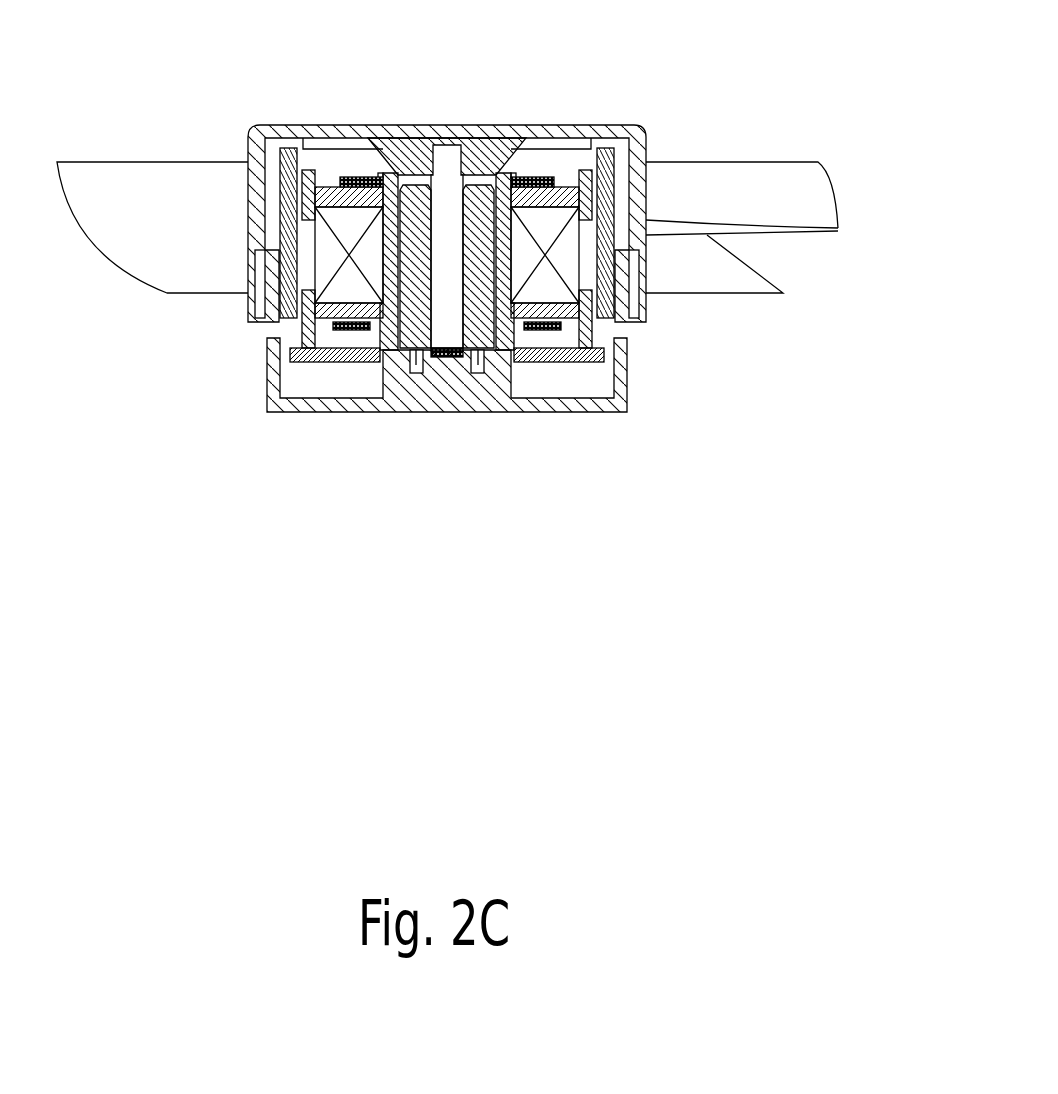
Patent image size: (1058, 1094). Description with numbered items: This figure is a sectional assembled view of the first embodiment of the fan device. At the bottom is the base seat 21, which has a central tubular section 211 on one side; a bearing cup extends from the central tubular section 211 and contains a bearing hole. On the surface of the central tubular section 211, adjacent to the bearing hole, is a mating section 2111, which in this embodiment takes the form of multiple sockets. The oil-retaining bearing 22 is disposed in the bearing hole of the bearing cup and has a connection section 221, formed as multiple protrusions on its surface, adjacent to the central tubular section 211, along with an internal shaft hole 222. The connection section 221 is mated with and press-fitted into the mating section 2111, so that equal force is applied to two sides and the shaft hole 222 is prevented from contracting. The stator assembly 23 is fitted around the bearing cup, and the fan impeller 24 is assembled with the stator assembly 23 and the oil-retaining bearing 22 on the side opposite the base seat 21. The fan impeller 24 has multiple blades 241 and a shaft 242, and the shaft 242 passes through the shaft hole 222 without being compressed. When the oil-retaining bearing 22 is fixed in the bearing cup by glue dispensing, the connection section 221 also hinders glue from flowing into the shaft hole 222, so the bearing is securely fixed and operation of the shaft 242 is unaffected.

The base seat 21 is at (560, 412).
The central tubular section 211 is at (323, 362).
The mating section 2111 is at (420, 372).
The oil-retaining bearing 22 is at (275, 125).
The connection section 221 is at (398, 350).
The shaft hole 222 is at (483, 177).
The stator assembly 23 is at (567, 193).
The fan impeller 24 is at (393, 125).
The blades 241 is at (747, 197).
The shaft 242 is at (448, 148).